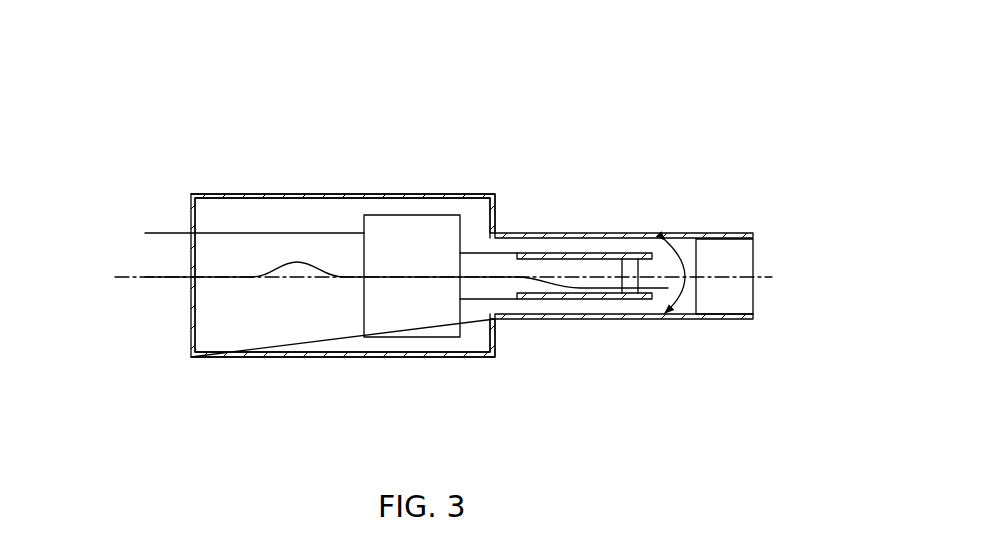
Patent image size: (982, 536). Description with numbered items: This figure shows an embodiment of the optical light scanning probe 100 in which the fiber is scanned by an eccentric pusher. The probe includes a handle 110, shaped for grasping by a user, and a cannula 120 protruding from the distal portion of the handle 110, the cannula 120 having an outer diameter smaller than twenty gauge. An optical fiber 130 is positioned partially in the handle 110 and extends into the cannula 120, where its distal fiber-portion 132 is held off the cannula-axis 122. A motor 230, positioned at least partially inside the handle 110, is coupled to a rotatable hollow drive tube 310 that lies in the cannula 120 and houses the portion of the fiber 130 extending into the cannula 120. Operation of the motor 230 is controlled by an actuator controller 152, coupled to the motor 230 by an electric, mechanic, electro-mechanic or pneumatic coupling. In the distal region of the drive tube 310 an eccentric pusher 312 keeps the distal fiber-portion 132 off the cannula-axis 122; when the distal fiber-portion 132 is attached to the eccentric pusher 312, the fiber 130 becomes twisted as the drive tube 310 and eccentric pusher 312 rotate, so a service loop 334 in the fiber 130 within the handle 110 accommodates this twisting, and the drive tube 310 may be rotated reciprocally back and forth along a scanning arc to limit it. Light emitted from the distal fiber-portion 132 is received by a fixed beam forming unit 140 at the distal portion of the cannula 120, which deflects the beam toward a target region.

The scanning probe 100 is at (350, 100).
The handle 110 is at (322, 194).
The cannula 120 is at (573, 233).
The cannula-axis 122 is at (659, 277).
The optical fiber 130 is at (432, 277).
The distal fiber-portion 132 is at (657, 290).
The fixed beam forming unit 140 is at (722, 239).
The actuator controller 152 is at (160, 232).
The motor 230 is at (393, 215).
The drive tube 310 is at (563, 300).
The eccentric pusher 312 is at (630, 293).
The service loop 334 is at (297, 263).